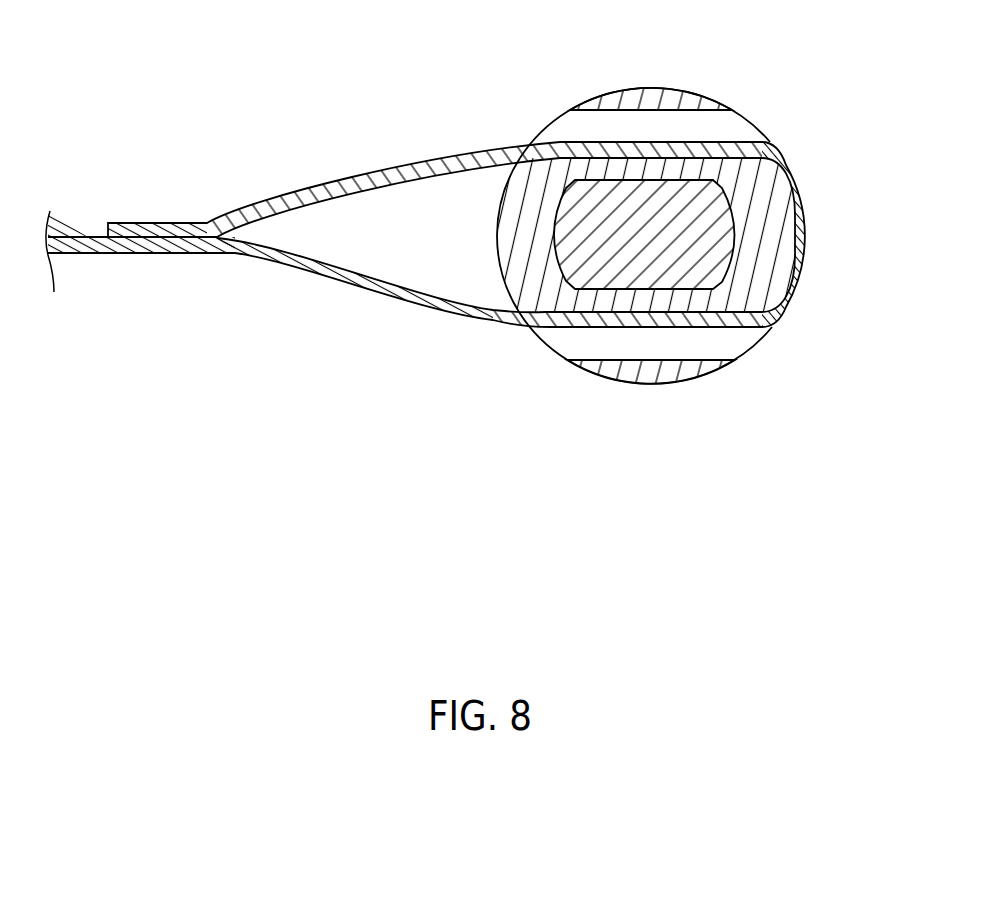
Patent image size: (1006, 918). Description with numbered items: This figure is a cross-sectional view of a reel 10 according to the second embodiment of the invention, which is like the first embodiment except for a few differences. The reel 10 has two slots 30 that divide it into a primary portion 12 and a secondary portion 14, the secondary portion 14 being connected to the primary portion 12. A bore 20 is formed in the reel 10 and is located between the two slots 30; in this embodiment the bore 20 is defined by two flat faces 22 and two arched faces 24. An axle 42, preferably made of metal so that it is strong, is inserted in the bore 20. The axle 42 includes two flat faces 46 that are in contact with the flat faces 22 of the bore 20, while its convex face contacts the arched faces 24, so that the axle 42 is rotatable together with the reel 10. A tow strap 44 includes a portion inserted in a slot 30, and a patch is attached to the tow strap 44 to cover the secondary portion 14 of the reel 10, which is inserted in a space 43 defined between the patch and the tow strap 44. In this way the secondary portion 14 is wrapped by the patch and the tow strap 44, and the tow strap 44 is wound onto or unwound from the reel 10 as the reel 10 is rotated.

The reel 10 is at (762, 17).
The primary portion 12 is at (758, 188).
The secondary portion 14 is at (660, 96).
The bore 20 is at (760, 247).
The flat face 22 is at (657, 180).
The arched face 24 is at (717, 243).
The slot 30 is at (727, 132).
The axle 42 is at (603, 278).
The space 43 is at (377, 207).
The tow strap 44 is at (108, 238).
The flat face 46 is at (618, 289).